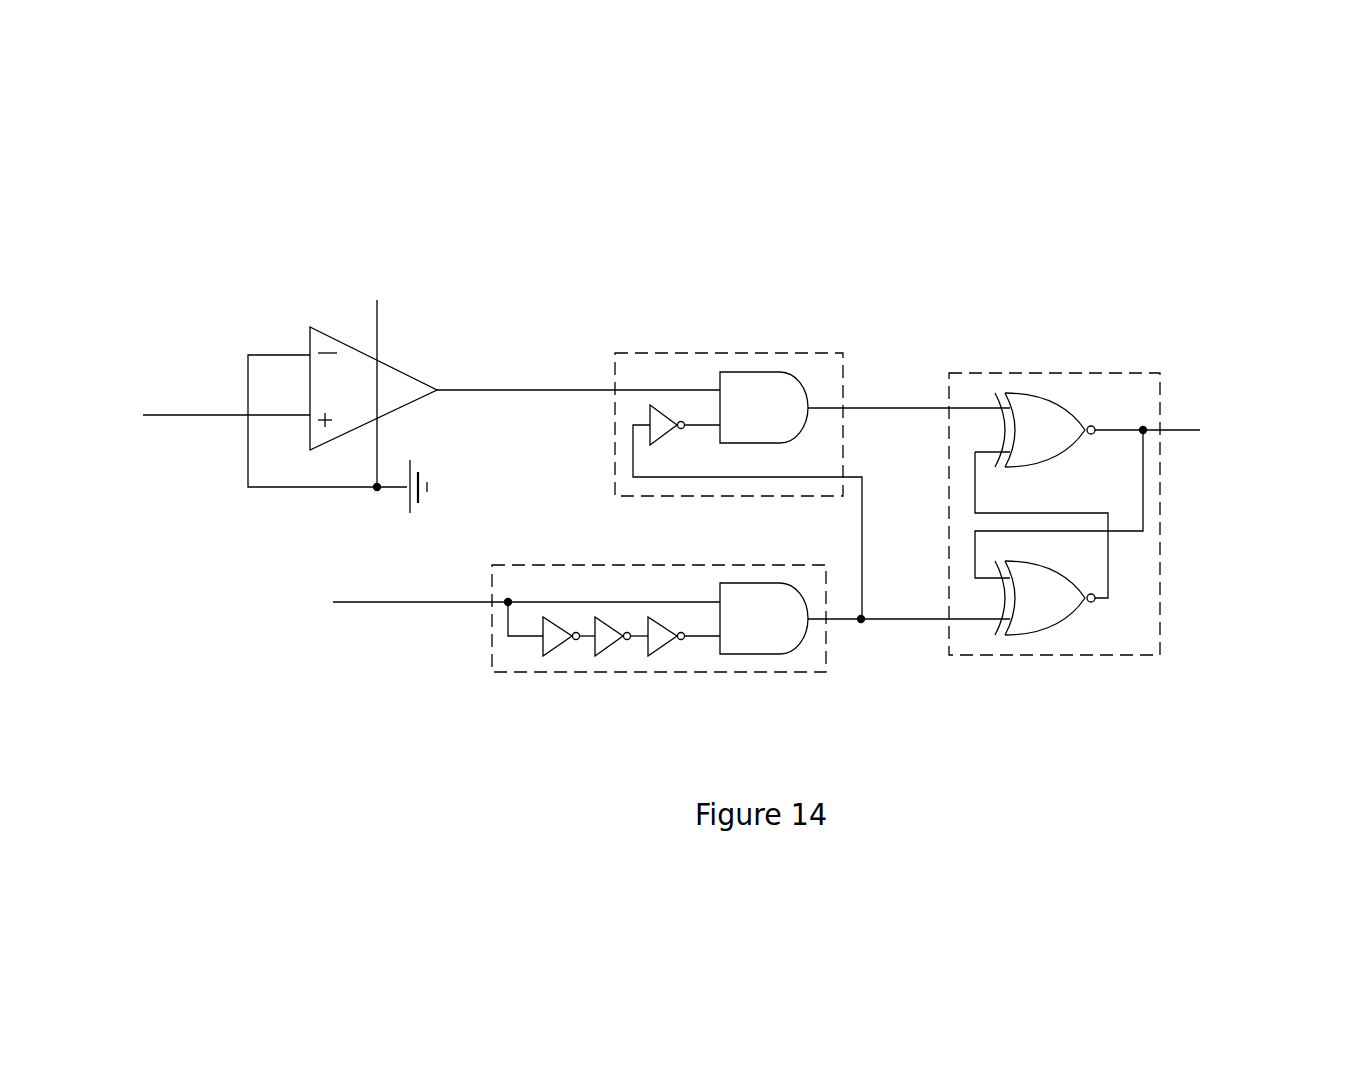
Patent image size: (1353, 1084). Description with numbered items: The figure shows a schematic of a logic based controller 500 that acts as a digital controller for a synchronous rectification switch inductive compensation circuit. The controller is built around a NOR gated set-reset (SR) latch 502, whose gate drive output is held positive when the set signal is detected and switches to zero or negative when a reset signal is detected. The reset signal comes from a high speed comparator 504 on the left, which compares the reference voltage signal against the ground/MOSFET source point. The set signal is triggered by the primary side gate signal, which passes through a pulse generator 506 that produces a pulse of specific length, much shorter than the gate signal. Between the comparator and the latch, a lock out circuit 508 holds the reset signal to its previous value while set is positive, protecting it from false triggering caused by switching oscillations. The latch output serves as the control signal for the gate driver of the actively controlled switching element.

The logic based controller 500 is at (218, 257).
The set-reset (SR) latch 502 is at (1160, 535).
The high speed comparator 504 is at (387, 362).
The pulse generator 506 is at (826, 655).
The lock out circuit 508 is at (843, 382).